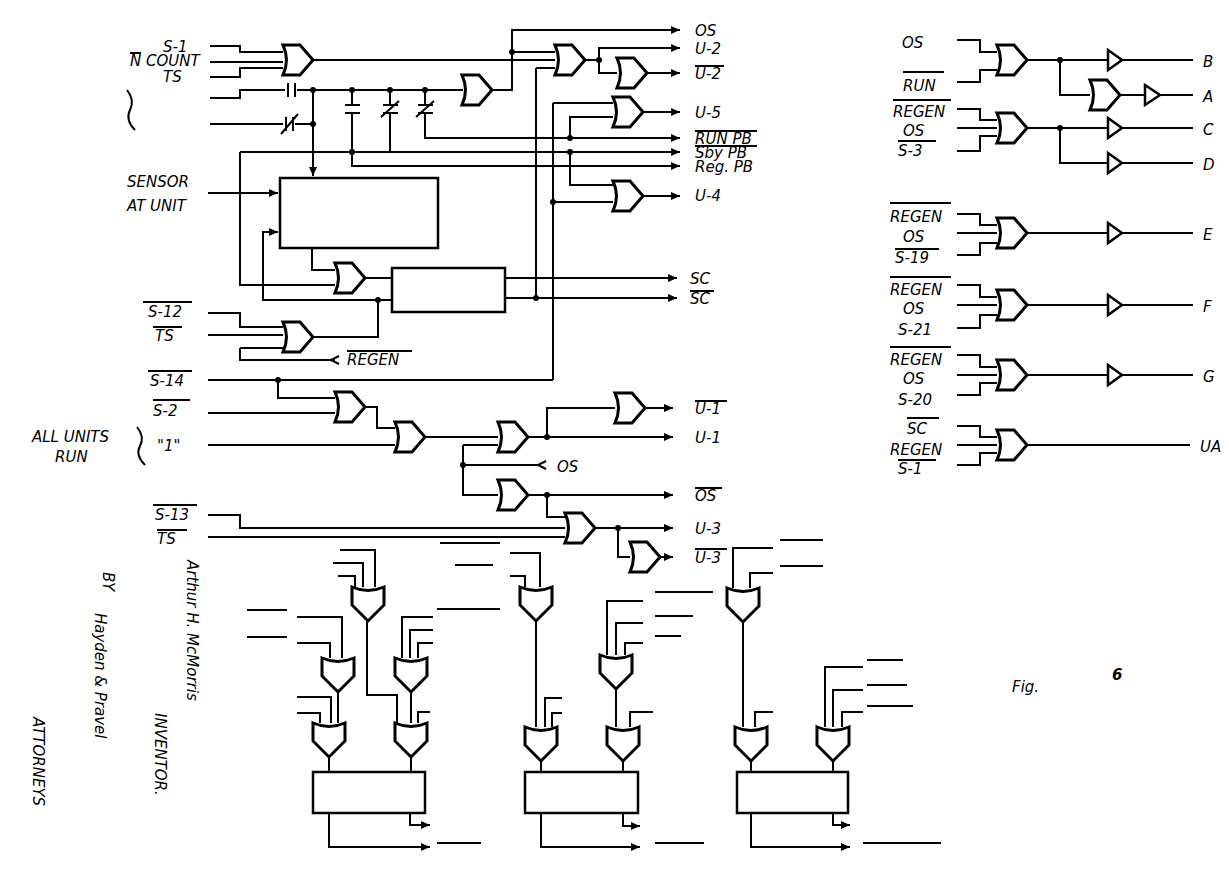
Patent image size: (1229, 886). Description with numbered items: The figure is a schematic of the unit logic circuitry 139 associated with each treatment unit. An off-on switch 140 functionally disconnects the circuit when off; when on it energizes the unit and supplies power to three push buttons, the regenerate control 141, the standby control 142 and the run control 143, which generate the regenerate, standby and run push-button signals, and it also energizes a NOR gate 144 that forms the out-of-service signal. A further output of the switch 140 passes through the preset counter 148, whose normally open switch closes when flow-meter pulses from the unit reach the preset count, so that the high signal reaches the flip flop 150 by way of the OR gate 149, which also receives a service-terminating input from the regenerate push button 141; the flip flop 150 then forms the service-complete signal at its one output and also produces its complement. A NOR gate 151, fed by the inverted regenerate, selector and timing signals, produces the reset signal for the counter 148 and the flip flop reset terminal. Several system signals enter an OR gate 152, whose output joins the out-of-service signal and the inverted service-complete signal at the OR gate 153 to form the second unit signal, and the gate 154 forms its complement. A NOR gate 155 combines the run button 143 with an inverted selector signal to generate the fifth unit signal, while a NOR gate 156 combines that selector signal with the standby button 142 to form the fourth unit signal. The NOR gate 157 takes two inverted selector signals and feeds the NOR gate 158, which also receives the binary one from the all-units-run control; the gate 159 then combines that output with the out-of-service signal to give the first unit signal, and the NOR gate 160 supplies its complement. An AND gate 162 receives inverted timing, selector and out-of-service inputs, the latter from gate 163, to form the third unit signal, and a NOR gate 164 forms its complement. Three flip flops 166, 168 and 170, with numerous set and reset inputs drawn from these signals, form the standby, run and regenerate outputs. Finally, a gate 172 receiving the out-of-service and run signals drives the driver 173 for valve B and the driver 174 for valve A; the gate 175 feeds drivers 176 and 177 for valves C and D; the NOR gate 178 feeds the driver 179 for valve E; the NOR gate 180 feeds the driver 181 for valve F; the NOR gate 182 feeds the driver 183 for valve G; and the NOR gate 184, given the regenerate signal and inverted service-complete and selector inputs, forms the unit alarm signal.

The unit logic circuitry 139 is at (985, 519).
The off-on switch 140 is at (124, 140).
The regenerate push button 141 is at (343, 106).
The standby push button 142 is at (383, 106).
The run push button 143 is at (423, 106).
The NOR gate 144 is at (487, 103).
The preset counter 148 is at (438, 213).
The OR gate 149 is at (362, 268).
The flip flop 150 is at (466, 267).
The NOR gate 151 is at (313, 327).
The OR gate 152 is at (317, 50).
The OR gate 153 is at (561, 77).
The gate 154 is at (637, 61).
The NOR gate 155 is at (638, 100).
The NOR gate 156 is at (636, 211).
The NOR gate 157 is at (364, 397).
The NOR gate 158 is at (423, 424).
The gate 159 is at (517, 421).
The NOR gate 160 is at (621, 392).
The AND gate 162 is at (592, 516).
The gate 163 is at (528, 487).
The NOR gate 164 is at (628, 567).
The flip flop 166 is at (313, 793).
The flip flop 168 is at (525, 784).
The flip flop 170 is at (737, 792).
The gate 172 is at (1020, 48).
The driver 173 is at (1115, 50).
The driver 174 is at (1154, 104).
The gate 175 is at (1010, 113).
The driver 176 is at (1115, 138).
The driver 177 is at (1115, 173).
The NOR gate 178 is at (1020, 221).
The driver 179 is at (1115, 223).
The NOR gate 180 is at (1020, 295).
The driver 181 is at (1115, 295).
The NOR gate 182 is at (1020, 365).
The driver 183 is at (1115, 367).
The NOR gate 184 is at (1020, 435).